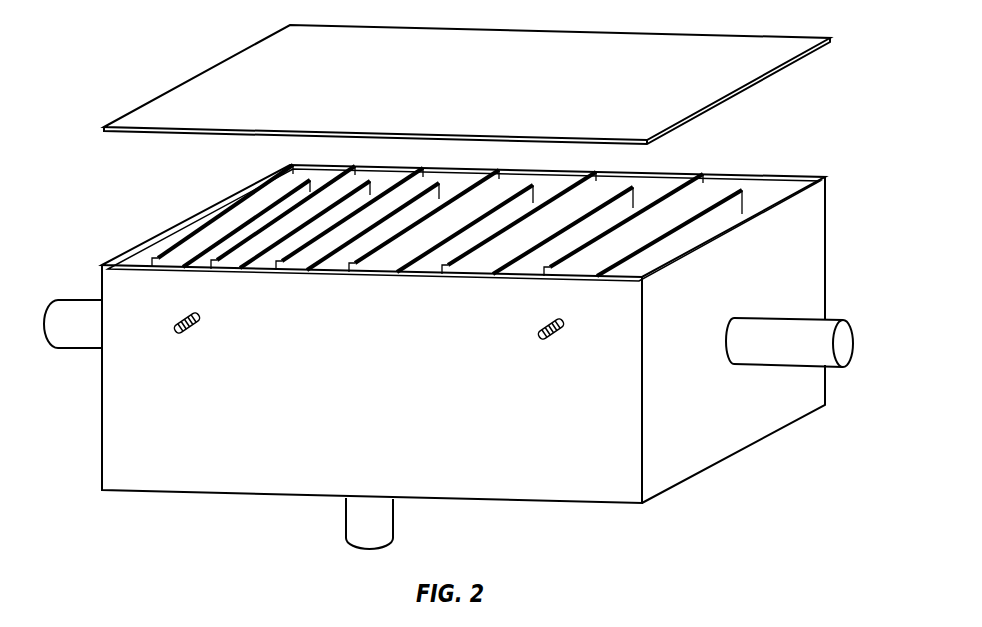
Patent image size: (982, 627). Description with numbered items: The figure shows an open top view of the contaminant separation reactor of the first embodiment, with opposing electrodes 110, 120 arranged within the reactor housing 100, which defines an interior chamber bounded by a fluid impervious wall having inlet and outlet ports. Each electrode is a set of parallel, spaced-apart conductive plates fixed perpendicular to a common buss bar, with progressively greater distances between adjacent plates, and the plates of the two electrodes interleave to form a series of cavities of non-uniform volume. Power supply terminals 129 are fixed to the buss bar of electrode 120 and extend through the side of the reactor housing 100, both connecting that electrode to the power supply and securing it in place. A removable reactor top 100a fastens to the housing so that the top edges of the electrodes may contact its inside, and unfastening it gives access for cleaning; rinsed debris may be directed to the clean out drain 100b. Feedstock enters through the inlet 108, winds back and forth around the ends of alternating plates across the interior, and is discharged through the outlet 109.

The reactor housing 100 is at (391, 401).
The removable reactor top 100a is at (486, 90).
The clean out drain 100b is at (393, 515).
The inlet 108 is at (95, 310).
The outlet 109 is at (813, 328).
The electrode 110 is at (730, 167).
The electrode 120 is at (137, 260).
The power supply terminals 129 is at (195, 331).